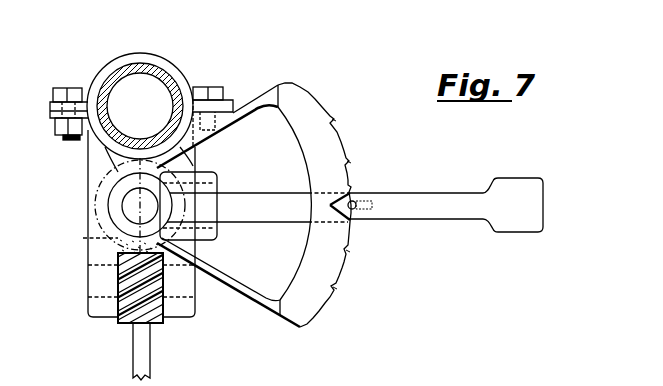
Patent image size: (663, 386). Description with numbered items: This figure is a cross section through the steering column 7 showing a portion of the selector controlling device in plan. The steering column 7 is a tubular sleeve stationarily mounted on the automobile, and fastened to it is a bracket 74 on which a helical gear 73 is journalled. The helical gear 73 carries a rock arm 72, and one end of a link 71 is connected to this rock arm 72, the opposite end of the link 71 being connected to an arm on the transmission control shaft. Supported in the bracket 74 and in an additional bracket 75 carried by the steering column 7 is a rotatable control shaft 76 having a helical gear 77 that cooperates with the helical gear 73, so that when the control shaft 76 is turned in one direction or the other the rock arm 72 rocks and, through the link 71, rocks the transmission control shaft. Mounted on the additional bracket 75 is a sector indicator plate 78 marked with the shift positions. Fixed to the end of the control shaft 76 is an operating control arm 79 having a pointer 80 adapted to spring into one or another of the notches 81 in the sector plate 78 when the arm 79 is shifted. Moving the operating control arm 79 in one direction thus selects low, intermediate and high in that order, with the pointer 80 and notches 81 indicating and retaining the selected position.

The steering column 7 is at (163, 85).
The link 71 is at (150, 366).
The rock arm 72 is at (165, 283).
The helical gear 73 is at (122, 302).
The bracket 74 is at (100, 253).
The additional bracket 75 is at (105, 147).
The control shaft 76 is at (128, 200).
The helical gear 77 is at (107, 242).
The sector indicator plate 78 is at (322, 107).
The operating control arm 79 is at (275, 193).
The pointer 80 is at (348, 182).
The notches 81 is at (334, 124).